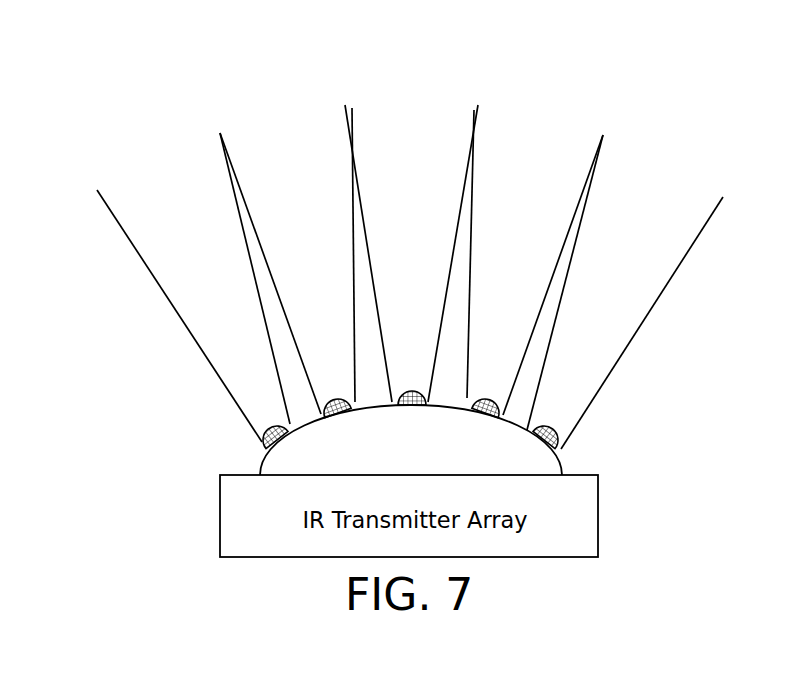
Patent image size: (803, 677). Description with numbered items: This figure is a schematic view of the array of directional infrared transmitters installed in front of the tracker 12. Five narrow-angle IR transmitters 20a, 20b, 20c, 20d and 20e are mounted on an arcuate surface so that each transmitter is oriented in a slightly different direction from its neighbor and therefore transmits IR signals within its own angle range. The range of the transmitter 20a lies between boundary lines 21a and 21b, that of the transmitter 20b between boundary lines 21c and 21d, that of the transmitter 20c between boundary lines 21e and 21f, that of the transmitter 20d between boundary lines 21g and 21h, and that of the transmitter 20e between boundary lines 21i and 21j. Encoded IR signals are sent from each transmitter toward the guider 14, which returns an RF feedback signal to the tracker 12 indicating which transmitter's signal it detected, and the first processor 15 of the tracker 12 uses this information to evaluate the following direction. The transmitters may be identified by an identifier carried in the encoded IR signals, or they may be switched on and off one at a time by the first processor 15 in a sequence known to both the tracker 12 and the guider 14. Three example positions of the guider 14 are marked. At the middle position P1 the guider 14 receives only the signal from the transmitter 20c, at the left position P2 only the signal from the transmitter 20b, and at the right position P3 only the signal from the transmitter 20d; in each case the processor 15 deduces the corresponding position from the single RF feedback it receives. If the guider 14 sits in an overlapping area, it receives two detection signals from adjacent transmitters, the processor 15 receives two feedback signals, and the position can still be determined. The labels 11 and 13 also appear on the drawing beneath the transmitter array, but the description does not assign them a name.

The IR transmitter element 11 is at (268, 417).
The tracker 12 is at (329, 393).
The IR transmitter element 13 is at (410, 383).
The guider 14 is at (493, 391).
The first processor 15 is at (554, 416).
The IR transmitter 20a is at (268, 418).
The IR transmitter 20b is at (332, 397).
The IR transmitter 20c is at (407, 390).
The IR transmitter 20d is at (487, 392).
The IR transmitter 20e is at (550, 425).
The boundary line 21a is at (148, 270).
The boundary line 21b is at (263, 309).
The boundary line 21c is at (250, 208).
The boundary line 21d is at (353, 292).
The boundary line 21e is at (367, 227).
The boundary line 21f is at (448, 283).
The boundary line 21g is at (470, 250).
The boundary line 21h is at (543, 300).
The boundary line 21i is at (573, 263).
The boundary line 21j is at (640, 320).
The middle position P1 is at (410, 102).
The left position P2 is at (285, 141).
The right position P3 is at (542, 137).